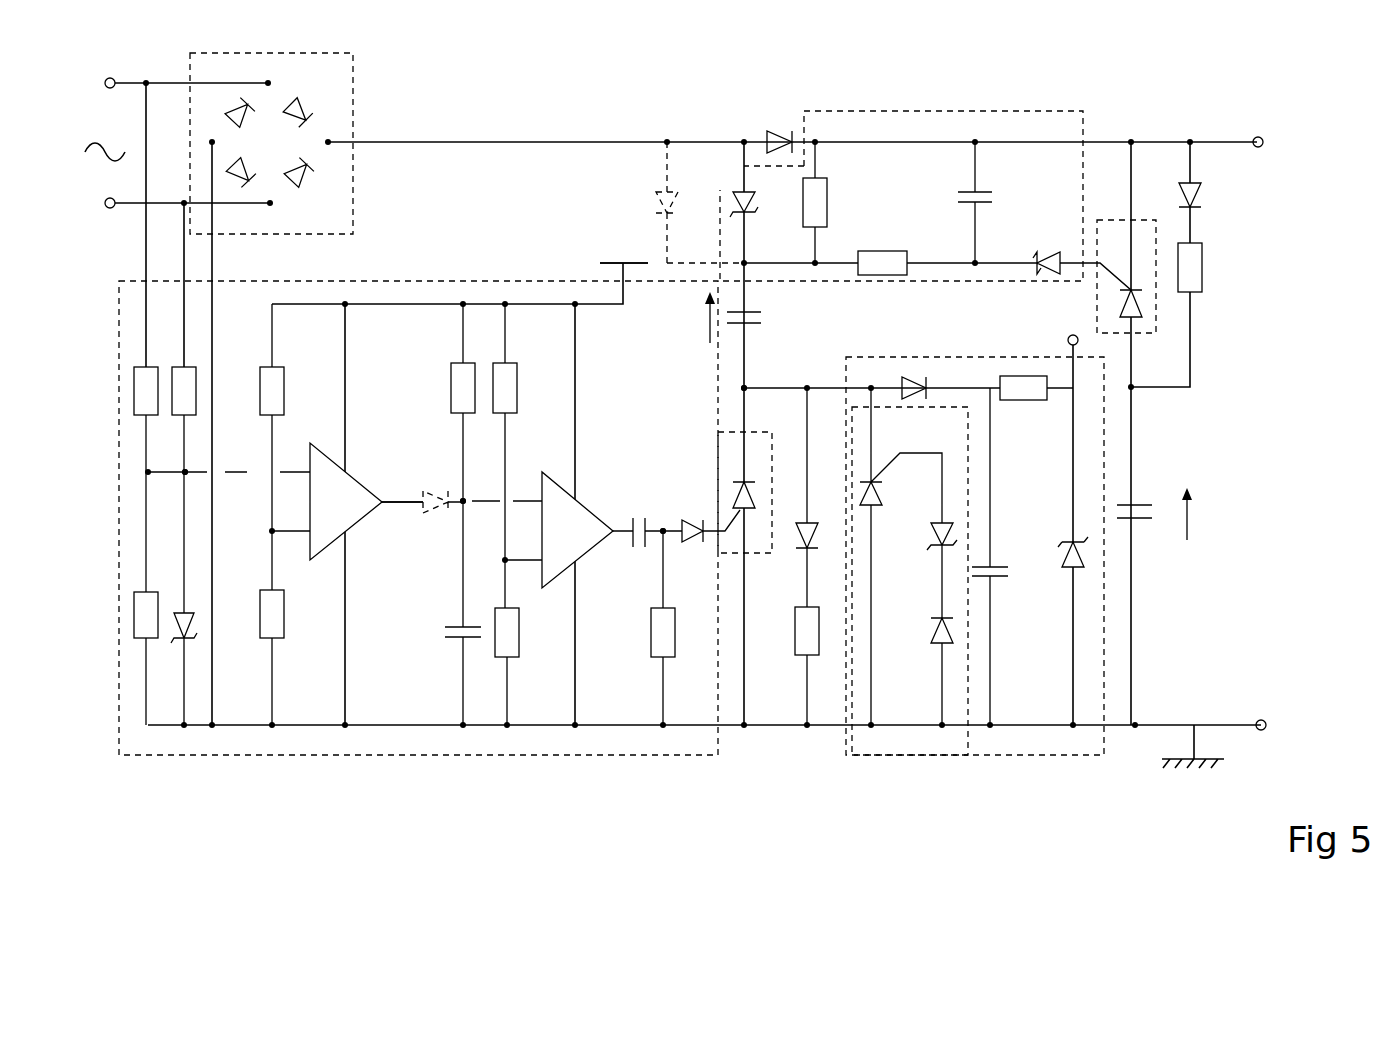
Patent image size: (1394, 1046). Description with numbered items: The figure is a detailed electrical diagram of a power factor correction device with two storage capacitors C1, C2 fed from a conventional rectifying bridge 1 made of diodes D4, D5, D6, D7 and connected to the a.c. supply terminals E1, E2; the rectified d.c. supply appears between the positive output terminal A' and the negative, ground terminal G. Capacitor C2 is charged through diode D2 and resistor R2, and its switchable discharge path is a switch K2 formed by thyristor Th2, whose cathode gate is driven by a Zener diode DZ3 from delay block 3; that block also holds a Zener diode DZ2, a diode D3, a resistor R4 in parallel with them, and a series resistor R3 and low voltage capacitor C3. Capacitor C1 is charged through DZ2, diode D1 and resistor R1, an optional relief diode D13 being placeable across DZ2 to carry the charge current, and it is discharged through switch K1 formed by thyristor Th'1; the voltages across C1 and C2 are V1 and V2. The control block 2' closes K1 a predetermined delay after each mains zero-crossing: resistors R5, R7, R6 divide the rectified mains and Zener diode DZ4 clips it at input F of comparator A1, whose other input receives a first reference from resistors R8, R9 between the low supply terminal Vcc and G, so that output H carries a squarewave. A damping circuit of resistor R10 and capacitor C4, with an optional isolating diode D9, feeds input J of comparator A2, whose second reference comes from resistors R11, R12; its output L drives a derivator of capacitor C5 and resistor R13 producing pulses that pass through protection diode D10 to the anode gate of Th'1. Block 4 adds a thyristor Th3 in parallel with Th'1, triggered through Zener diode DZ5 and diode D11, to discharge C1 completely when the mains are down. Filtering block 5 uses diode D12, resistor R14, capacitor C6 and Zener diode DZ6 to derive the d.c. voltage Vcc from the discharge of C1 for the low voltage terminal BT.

The rectifying bridge 1 is at (363, 108).
The control block 2' is at (418, 486).
The delay block 3 is at (934, 111).
The block 4 is at (918, 756).
The filtering block 5 is at (1043, 756).
The terminal E1 is at (90, 84).
The terminal E2 is at (90, 204).
The positive output terminal A' is at (1251, 102).
The negative output terminal G is at (1257, 719).
The low voltage terminal BT is at (1068, 338).
The positive low d.c. supply voltage terminal Vcc is at (624, 250).
The diode D4 is at (226, 111).
The diode D5 is at (311, 106).
The diode D6 is at (249, 166).
The diode D7 is at (301, 190).
The resistor R5 is at (135, 479).
The resistor R6 is at (129, 658).
The resistor R7 is at (173, 477).
The Zener diode DZ4 is at (197, 630).
The first input F is at (207, 476).
The resistor R8 is at (289, 447).
The resistor R9 is at (288, 657).
The comparator A1 is at (360, 482).
The output H is at (386, 508).
The isolating diode D9 is at (444, 492).
The first input J is at (458, 506).
The resistor R10 is at (440, 465).
The capacitor C4 is at (453, 661).
The resistor R11 is at (527, 456).
The resistor R12 is at (531, 666).
The comparator A2 is at (592, 507).
The capacitor C5 is at (638, 517).
The output L is at (617, 540).
The resistor R13 is at (637, 628).
The protection diode D10 is at (701, 540).
The thyristor Th'1 is at (716, 492).
The relief diode D13 is at (673, 202).
The Zener diode DZ2 is at (724, 191).
The storage capacitor C1 is at (762, 320).
The voltage V1 is at (695, 317).
The switch K1 is at (766, 430).
The diode D3 is at (778, 126).
The resistor R4 is at (832, 202).
The resistor R3 is at (882, 249).
The low voltage capacitor C3 is at (956, 202).
The Zener diode DZ3 is at (1040, 258).
The switch K2 is at (1120, 220).
The thyristor Th2 is at (1142, 306).
The diode D2 is at (1211, 195).
The resistor R2 is at (1210, 267).
The storage capacitor C2 is at (1142, 495).
The voltage V2 is at (1201, 514).
The diode D1 is at (821, 497).
The resistor R1 is at (789, 666).
The diode D12 is at (910, 377).
The thyristor Th3 is at (901, 556).
The triggering Zener diode DZ5 is at (918, 570).
The diode D11 is at (916, 671).
The capacitor C6 is at (999, 556).
The resistor R14 is at (1023, 409).
The Zener diode DZ6 is at (1055, 537).